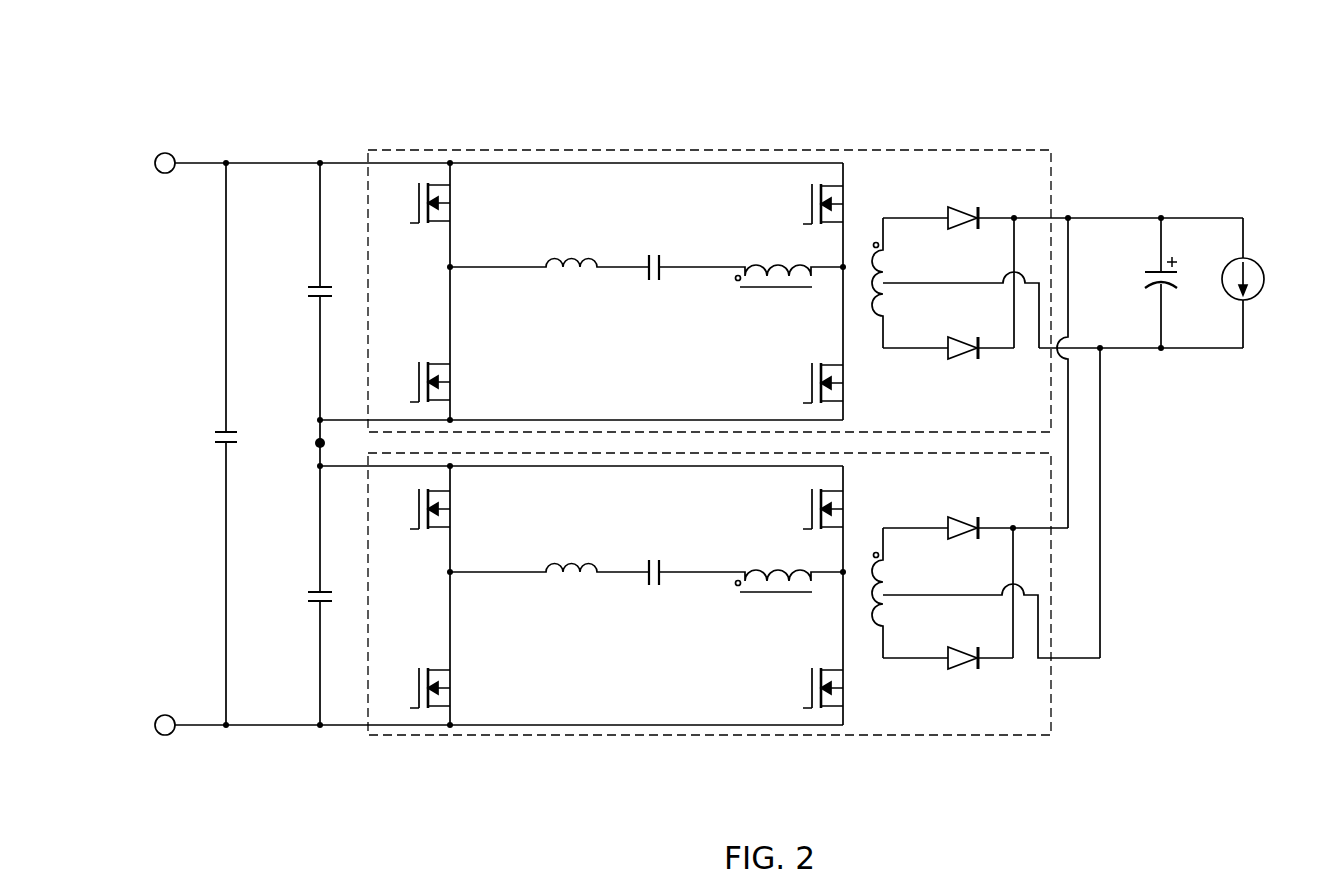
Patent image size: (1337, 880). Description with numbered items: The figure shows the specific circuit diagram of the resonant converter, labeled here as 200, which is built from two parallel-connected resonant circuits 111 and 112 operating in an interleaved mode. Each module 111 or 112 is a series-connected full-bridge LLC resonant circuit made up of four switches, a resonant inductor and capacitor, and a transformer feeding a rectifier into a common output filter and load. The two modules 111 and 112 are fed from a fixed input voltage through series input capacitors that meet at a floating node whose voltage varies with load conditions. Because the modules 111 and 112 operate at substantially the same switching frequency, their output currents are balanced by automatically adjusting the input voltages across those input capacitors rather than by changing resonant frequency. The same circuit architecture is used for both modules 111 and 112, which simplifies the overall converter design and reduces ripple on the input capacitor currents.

The power converter circuit 200 is at (787, 47).
The resonant circuit 111 is at (837, 148).
The resonant circuit 112 is at (836, 737).